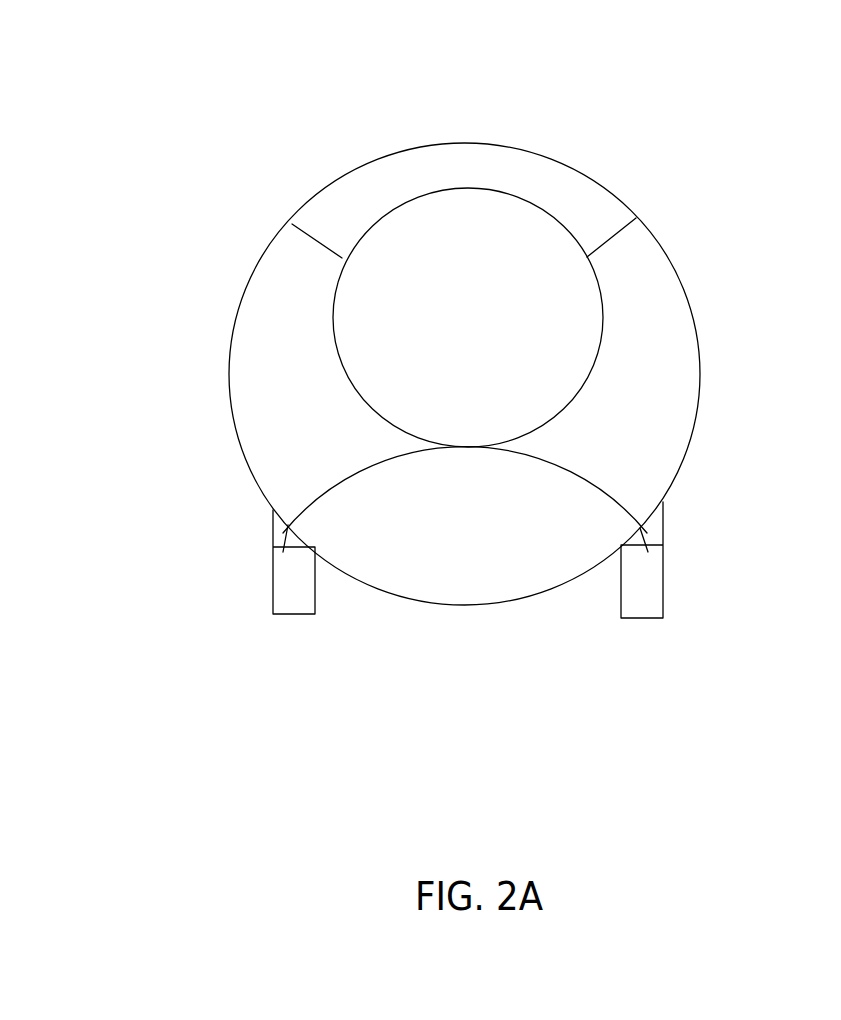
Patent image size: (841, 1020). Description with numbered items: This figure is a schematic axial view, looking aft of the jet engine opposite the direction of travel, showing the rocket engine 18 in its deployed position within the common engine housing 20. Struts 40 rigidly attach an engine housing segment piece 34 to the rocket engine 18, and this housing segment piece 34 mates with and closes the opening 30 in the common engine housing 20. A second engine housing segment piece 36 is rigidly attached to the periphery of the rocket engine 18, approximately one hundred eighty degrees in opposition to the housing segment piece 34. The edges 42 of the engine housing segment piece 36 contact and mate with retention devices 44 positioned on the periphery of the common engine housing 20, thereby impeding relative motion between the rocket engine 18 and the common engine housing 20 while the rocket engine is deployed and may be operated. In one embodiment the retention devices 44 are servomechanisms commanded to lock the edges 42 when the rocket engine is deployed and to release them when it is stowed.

The rocket engine 18 is at (600, 330).
The common engine housing 20 is at (657, 238).
The opening 30 is at (615, 193).
The engine housing segment piece 34 is at (558, 156).
The engine housing segment piece 36 is at (377, 468).
The struts 40 is at (322, 237).
The edges 42 is at (273, 522).
The retention devices 44 is at (665, 577).